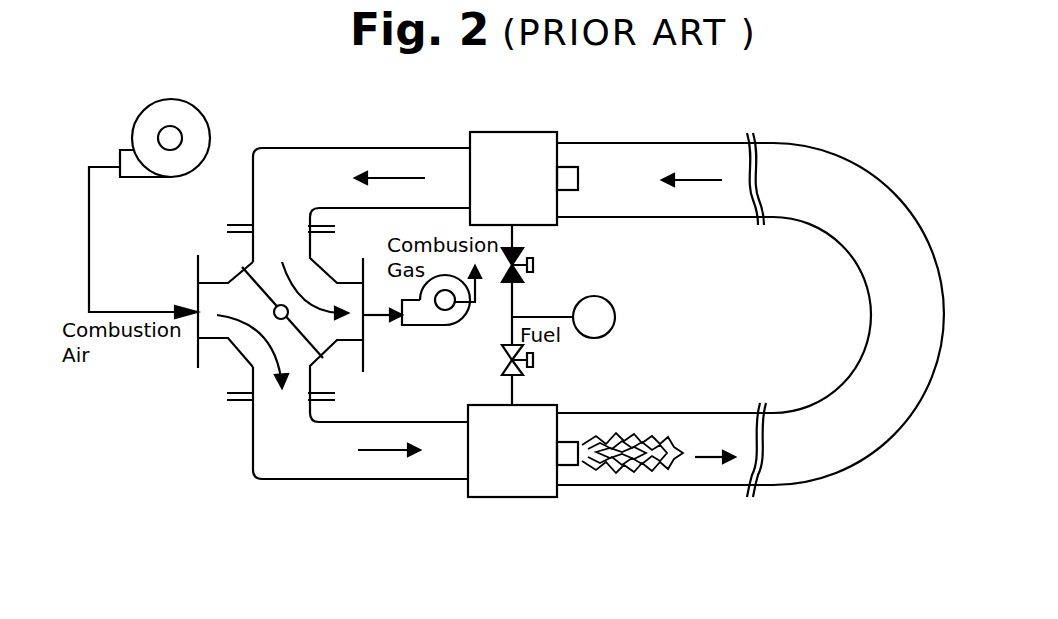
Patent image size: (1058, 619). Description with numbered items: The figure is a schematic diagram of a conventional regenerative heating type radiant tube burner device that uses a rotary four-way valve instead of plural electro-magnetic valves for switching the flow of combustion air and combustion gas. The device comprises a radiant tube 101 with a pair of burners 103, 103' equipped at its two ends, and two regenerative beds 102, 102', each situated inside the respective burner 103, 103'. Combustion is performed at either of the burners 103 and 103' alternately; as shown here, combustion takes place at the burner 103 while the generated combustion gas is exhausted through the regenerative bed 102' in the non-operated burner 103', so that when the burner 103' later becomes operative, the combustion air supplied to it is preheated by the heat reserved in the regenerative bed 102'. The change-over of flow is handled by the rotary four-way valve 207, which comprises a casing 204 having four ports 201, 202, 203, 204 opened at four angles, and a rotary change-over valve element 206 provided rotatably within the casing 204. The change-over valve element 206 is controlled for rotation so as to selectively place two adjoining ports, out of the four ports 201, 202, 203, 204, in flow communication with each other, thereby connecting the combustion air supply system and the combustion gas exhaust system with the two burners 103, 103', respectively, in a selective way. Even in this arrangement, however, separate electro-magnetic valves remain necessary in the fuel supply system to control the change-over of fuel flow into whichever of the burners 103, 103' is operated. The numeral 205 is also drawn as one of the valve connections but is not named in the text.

The radiant tube 101 is at (838, 466).
The regenerative bed 102 is at (512, 478).
The regenerative bed 102' is at (515, 151).
The burner 103 is at (620, 492).
The burner 103' is at (594, 143).
The port 201 is at (298, 243).
The port 202 is at (347, 332).
The port 203 is at (257, 383).
The casing 204 is at (208, 288).
The inlet port 205 is at (232, 350).
The rotary change-over valve element 206 is at (325, 352).
The rotary four-way valve 207 is at (292, 348).